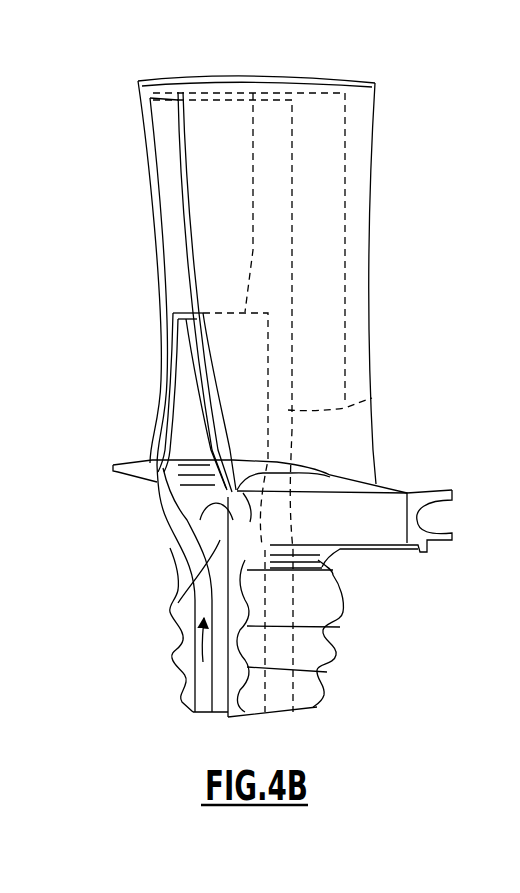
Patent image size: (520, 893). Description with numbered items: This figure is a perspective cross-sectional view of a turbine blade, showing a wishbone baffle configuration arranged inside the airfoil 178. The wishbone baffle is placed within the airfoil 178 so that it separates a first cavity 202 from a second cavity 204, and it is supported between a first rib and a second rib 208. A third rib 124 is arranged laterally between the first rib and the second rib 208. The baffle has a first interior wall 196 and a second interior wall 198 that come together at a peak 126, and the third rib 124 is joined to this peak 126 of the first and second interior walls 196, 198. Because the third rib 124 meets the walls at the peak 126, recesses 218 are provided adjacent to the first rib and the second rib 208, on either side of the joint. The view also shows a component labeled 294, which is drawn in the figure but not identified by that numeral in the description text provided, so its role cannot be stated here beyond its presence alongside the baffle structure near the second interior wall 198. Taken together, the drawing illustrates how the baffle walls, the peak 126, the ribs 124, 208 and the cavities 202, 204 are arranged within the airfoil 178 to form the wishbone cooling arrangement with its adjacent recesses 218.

The airfoil 178 is at (386, 156).
The second cavity 204 is at (174, 270).
The baffle 294 is at (190, 413).
The second interior wall 198 is at (180, 442).
The first interior wall 196 is at (157, 486).
The second rib 208 is at (372, 398).
The peak 126 is at (170, 548).
The recess 218 is at (222, 430).
The third rib 124 is at (170, 608).
The first cavity 202 is at (187, 667).